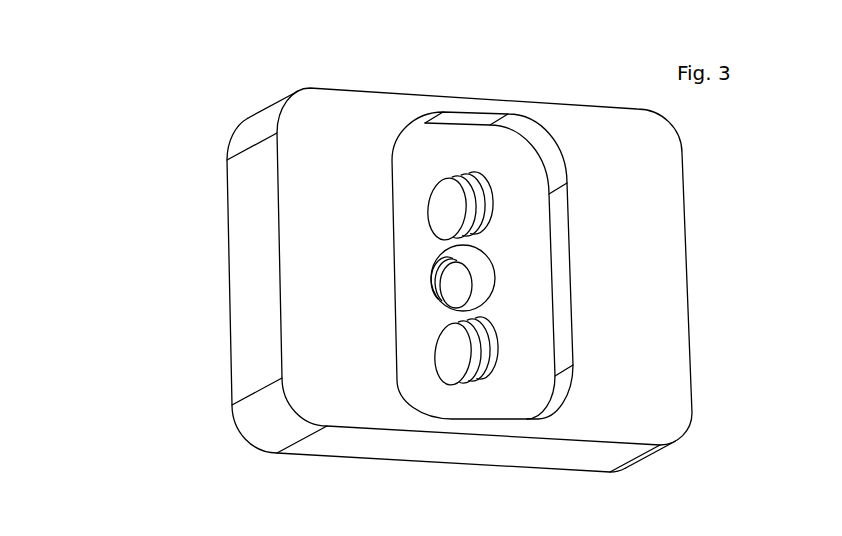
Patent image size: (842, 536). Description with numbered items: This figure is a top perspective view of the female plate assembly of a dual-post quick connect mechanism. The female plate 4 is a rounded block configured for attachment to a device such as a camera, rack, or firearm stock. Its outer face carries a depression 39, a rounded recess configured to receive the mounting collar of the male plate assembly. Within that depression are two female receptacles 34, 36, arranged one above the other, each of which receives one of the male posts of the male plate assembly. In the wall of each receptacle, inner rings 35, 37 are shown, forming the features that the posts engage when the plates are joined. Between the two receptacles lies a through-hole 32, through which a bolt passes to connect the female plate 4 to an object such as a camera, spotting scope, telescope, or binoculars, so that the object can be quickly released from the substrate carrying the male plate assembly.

The female plate 4 is at (223, 192).
The through-hole 32 is at (450, 280).
The female receptacle 34 is at (527, 148).
The inner ring 35 is at (483, 197).
The female receptacle 36 is at (499, 412).
The inner ring 37 is at (490, 355).
The depression 39 is at (538, 261).